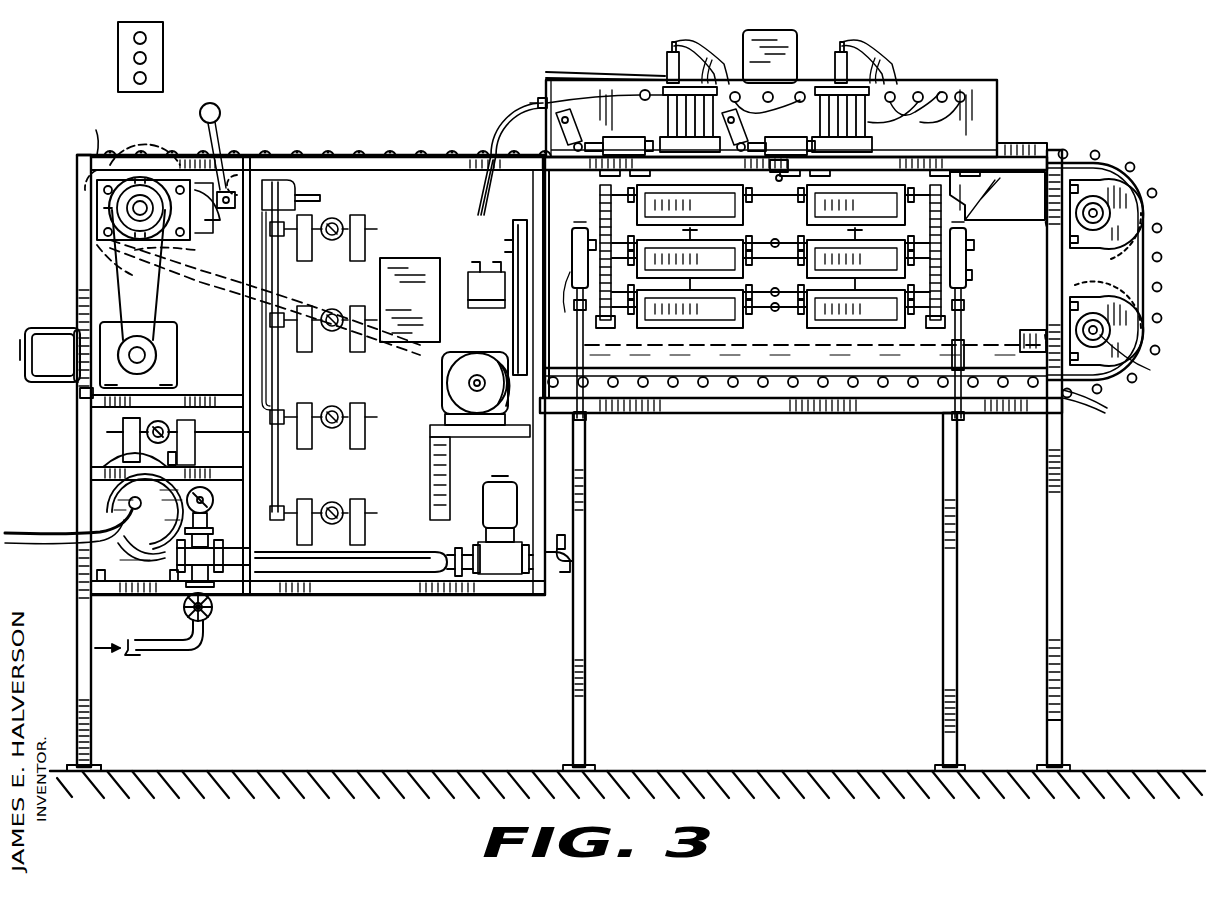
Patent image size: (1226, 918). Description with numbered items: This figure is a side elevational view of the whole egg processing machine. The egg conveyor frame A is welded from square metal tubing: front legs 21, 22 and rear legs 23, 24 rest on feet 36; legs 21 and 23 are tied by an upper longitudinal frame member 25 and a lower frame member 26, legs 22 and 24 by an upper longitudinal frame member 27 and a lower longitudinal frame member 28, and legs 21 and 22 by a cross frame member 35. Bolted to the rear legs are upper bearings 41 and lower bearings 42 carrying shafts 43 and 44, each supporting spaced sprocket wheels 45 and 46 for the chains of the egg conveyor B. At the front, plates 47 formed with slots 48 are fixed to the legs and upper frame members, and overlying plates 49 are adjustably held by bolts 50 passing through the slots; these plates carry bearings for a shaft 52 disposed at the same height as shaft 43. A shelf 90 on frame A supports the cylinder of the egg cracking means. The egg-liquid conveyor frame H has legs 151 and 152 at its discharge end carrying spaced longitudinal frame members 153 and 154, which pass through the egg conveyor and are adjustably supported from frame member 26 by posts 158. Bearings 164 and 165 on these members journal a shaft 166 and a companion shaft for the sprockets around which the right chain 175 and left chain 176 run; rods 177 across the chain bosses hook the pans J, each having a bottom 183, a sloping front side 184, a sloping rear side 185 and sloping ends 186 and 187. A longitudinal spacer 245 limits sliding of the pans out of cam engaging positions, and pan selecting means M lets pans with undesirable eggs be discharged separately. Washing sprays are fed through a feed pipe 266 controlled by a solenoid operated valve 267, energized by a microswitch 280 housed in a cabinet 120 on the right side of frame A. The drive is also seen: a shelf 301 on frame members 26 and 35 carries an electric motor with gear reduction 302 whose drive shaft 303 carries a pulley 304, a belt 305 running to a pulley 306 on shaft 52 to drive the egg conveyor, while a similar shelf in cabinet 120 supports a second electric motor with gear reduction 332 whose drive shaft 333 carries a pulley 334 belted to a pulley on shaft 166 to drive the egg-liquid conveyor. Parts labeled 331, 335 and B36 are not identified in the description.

The front leg 21 is at (83, 648).
The front leg 22 is at (90, 166).
The rear leg 23 is at (1060, 559).
The rear leg 24 is at (1062, 734).
The upper longitudinal frame member 25 is at (220, 163).
The lower frame member 26 is at (864, 415).
The upper longitudinal frame member 27 is at (97, 155).
The lower longitudinal frame member 28 is at (712, 413).
The cross frame member 35 is at (78, 403).
The feet 36 is at (98, 765).
The upper bearings 41 is at (122, 208).
The lower bearings 42 is at (1103, 373).
The shaft 43 is at (1106, 202).
The shaft 44 is at (1150, 370).
The sprocket wheels 45 is at (1160, 218).
The sprocket wheels 46 is at (1130, 316).
The plates 47 is at (103, 271).
The slots 48 is at (215, 217).
The plates 49 is at (165, 167).
The bolts 50 is at (97, 175).
The shaft 52 is at (160, 260).
The shelf 90 is at (928, 165).
The cabinet 120 is at (374, 151).
The leg 151 is at (943, 666).
The leg 152 is at (572, 698).
The longitudinal frame member 153 is at (968, 283).
The longitudinal frame member 154 is at (571, 275).
The posts 158 is at (966, 335).
The bearings 164 is at (965, 234).
The bearings 165 is at (570, 234).
The shaft 166 is at (510, 232).
The right chain 175 is at (956, 202).
The left chain 176 is at (600, 198).
The rods 177 is at (620, 310).
The bottom 183 is at (888, 313).
The sloping front side 184 is at (726, 322).
The sloping rear side 185 is at (740, 273).
The sloping end 186 is at (643, 309).
The sloping end 187 is at (740, 336).
The longitudinal spacer 245 is at (783, 168).
The feed pipe 266 is at (520, 525).
The solenoid operated valve 267 is at (515, 500).
The microswitch 280 is at (470, 286).
The shelf 301 is at (210, 395).
The electric motor with gear reduction 302 is at (100, 334).
The drive shaft 303 is at (147, 350).
The pulley 304 is at (60, 364).
The belt 305 is at (112, 292).
The pulley 306 is at (115, 222).
The stand 331 is at (480, 437).
The electric motor with gear reduction 332 is at (442, 385).
The drive shaft 333 is at (506, 364).
The pulley 334 is at (528, 437).
The vertical bar 335 is at (513, 318).
The egg conveyor frame A is at (1066, 617).
The egg conveyor B is at (903, 415).
The conduit B36 is at (517, 220).
The egg-liquid conveyor frame H is at (941, 573).
The pans J is at (843, 320).
The pan selecting means M is at (925, 172).